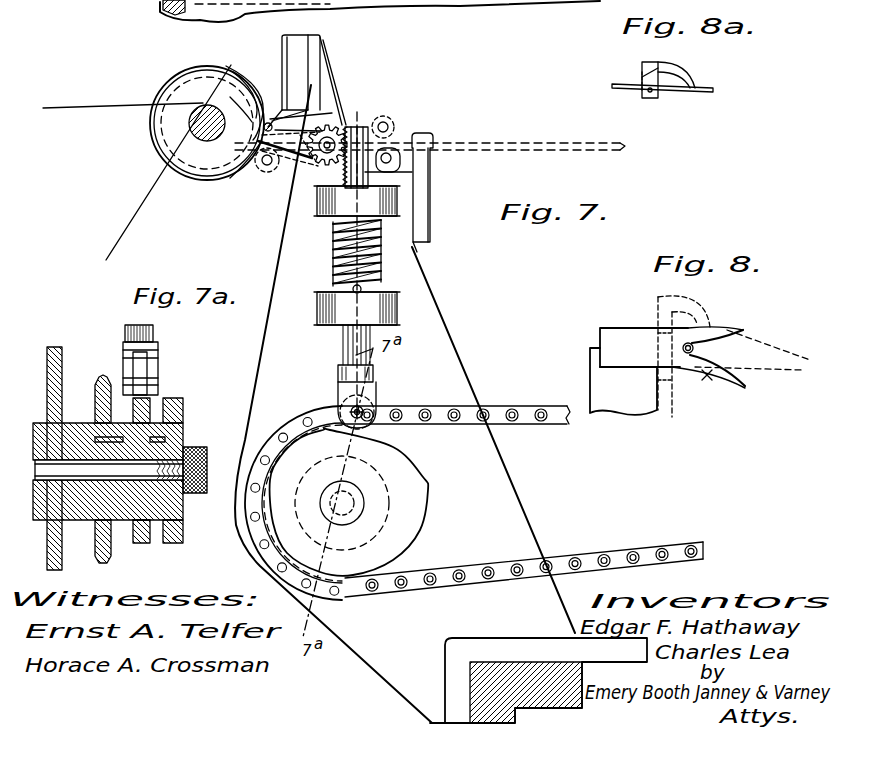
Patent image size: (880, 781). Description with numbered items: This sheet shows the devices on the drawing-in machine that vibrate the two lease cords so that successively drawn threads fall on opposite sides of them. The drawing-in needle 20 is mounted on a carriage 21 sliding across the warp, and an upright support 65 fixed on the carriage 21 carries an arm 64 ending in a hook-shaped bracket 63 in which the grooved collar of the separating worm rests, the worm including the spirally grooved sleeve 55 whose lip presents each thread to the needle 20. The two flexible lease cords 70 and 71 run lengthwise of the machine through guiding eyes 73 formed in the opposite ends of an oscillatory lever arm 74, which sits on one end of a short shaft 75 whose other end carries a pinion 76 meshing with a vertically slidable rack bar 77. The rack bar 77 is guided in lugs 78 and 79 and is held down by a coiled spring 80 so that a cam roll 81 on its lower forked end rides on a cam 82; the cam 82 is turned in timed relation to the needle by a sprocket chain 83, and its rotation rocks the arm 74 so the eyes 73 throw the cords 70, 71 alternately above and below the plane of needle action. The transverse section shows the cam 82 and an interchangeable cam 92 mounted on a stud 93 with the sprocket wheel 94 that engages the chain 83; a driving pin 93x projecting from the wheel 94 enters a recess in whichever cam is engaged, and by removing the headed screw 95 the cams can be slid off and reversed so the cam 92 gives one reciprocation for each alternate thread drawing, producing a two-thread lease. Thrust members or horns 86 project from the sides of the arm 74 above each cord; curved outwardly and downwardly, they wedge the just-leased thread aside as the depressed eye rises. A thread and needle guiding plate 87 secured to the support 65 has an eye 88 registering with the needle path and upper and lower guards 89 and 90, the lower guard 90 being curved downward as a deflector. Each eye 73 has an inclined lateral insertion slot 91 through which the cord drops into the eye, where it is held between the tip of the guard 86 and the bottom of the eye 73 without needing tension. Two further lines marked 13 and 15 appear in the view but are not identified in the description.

In FIG. 7, the line 13 is at (133, 234).
In FIG. 7, the shaft 15 is at (192, 122).
In FIG. 7, the drawing-in needle 20 is at (440, 156).
In FIG. 8, the drawing-in needle 20 is at (742, 341).
In FIG. 7, the carriage 21 is at (462, 675).
In FIG. 7, the spirally grooved sleeve 55 is at (200, 108).
In FIG. 7, the hook-shaped bracket 63 is at (210, 178).
In FIG. 7, the arm 64 is at (275, 77).
In FIG. 7, the upright support 65 is at (280, 328).
In FIG. 8, the upright support 65 is at (602, 398).
In FIG. 7, the lease cord 70 is at (318, 112).
In FIG. 8, the lease cord 70 is at (655, 317).
In FIG. 7, the lease cord 71 is at (390, 150).
In FIG. 8A, the lease cord 71 is at (703, 92).
In FIG. 8, the lease cord 71 is at (655, 378).
In FIG. 7, the guiding eye 73 is at (275, 120).
In FIG. 8A, the guiding eye 73 is at (643, 93).
In FIG. 7, the oscillatory lever arm 74 is at (295, 156).
In FIG. 8A, the oscillatory lever arm 74 is at (658, 95).
In FIG. 8, the oscillatory lever arm 74 is at (670, 330).
In FIG. 7, the short shaft 75 is at (325, 140).
In FIG. 7, the pinion 76 is at (325, 167).
In FIG. 7, the rack bar 77 is at (365, 132).
In FIG. 7, the lug 78 is at (333, 210).
In FIG. 7, the lug 79 is at (333, 316).
In FIG. 7, the coiled spring 80 is at (372, 262).
In FIG. 7, the cam roll 81 is at (373, 400).
In FIG. 7A, the cam roll 81 is at (143, 368).
In FIG. 7, the cam 82 is at (307, 417).
In FIG. 7A, the cam 82 is at (142, 543).
In FIG. 7, the sprocket chain 83 is at (500, 408).
In FIG. 8A, the thrust member 86 is at (670, 66).
In FIG. 8, the thrust member 86 is at (703, 308).
In FIG. 7, the thread and needle guiding plate 87 is at (433, 137).
In FIG. 8, the thread and needle guiding plate 87 is at (629, 332).
In FIG. 8, the eye 88 is at (690, 346).
In FIG. 8, the upper guard 89 is at (737, 328).
In FIG. 8, the lower guard 90 is at (740, 385).
In FIG. 7, the insertion slot 91 is at (229, 72).
In FIG. 8A, the insertion slot 91 is at (642, 72).
In FIG. 8, the insertion slot 91 is at (658, 295).
In FIG. 7, the cam 92 is at (423, 478).
In FIG. 7A, the cam 92 is at (183, 400).
In FIG. 7A, the stud 93 is at (40, 425).
In FIG. 7A, the driving pin 93x is at (115, 433).
In FIG. 7A, the sprocket wheel 94 is at (95, 402).
In FIG. 7, the headed screw 95 is at (362, 513).
In FIG. 7A, the headed screw 95 is at (203, 450).